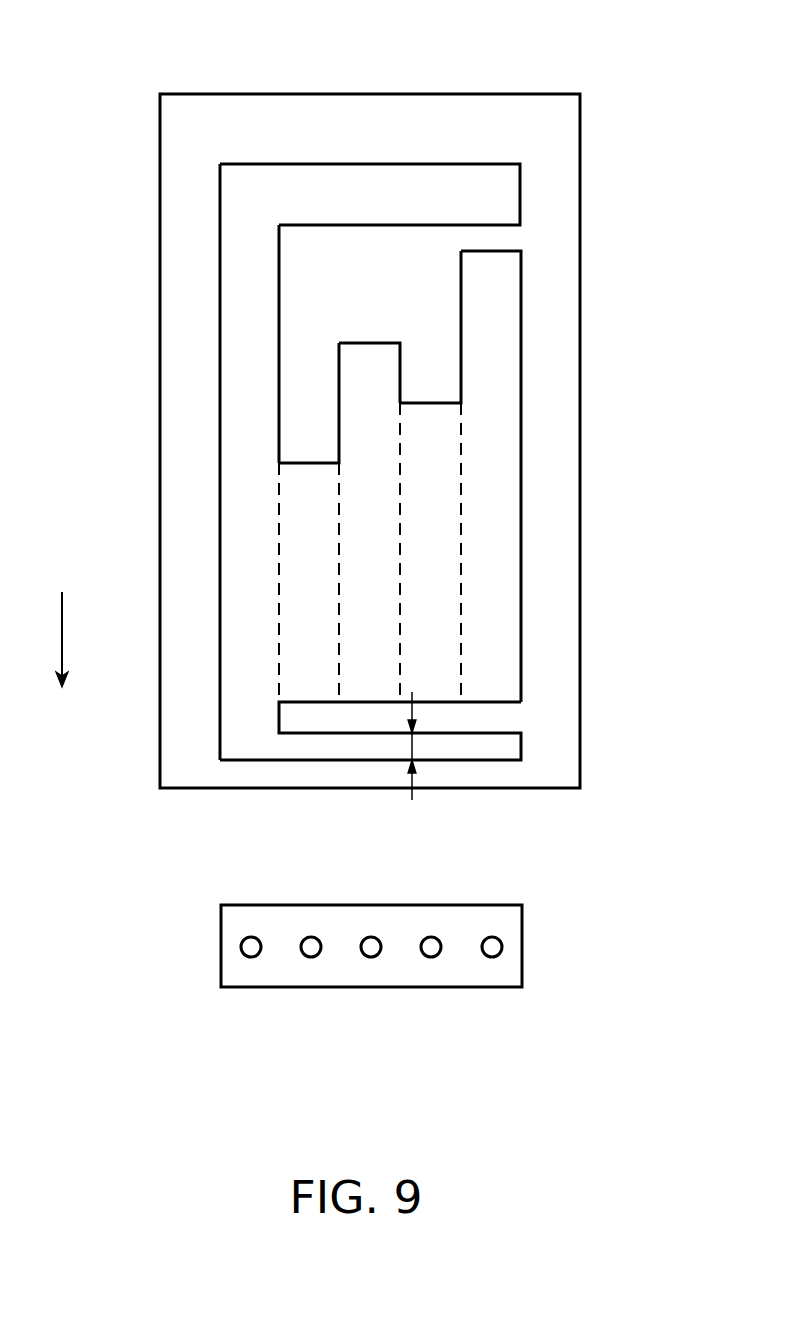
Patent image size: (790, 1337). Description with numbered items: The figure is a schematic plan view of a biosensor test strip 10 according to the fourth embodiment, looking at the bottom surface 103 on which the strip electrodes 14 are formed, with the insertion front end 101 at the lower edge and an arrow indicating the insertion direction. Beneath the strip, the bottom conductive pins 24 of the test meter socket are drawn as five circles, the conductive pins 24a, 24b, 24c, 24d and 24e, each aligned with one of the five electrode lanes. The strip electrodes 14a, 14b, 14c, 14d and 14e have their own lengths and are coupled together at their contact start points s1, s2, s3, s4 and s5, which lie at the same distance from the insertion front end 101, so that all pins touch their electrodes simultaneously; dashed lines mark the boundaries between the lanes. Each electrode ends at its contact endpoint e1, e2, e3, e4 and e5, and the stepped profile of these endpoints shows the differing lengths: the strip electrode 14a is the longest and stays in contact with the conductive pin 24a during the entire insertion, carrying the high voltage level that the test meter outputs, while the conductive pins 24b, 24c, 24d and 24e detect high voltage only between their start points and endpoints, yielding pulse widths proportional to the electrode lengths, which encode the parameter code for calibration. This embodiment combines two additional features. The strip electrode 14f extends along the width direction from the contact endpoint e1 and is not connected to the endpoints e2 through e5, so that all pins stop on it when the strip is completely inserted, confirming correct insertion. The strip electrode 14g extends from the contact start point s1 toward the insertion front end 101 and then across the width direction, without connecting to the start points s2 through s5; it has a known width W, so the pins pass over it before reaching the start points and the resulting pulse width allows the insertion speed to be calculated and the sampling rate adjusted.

The biosensor test strip 10 is at (582, 148).
The insertion front end 101 is at (533, 790).
The bottom surface 103 is at (563, 753).
The strip electrodes 14 is at (398, 395).
The strip electrode 14a is at (255, 163).
The strip electrode 14b is at (308, 462).
The strip electrode 14c is at (367, 342).
The strip electrode 14d is at (429, 402).
The strip electrode 14e is at (493, 249).
The strip electrode 14f is at (433, 163).
The strip electrode 14g is at (493, 731).
The contact endpoint e1 is at (248, 188).
The contact endpoint e2 is at (308, 487).
The contact endpoint e3 is at (368, 367).
The contact endpoint e4 is at (430, 425).
The contact endpoint e5 is at (490, 275).
The contact start point s1 is at (251, 678).
The contact start point s2 is at (311, 678).
The contact start point s3 is at (371, 678).
The contact start point s4 is at (432, 678).
The contact start point s5 is at (492, 678).
The width W is at (428, 746).
The bottom conductive pins 24 is at (371, 1021).
The conductive pin 24a is at (253, 950).
The conductive pin 24b is at (313, 950).
The conductive pin 24c is at (373, 950).
The conductive pin 24d is at (433, 950).
The conductive pin 24e is at (492, 988).